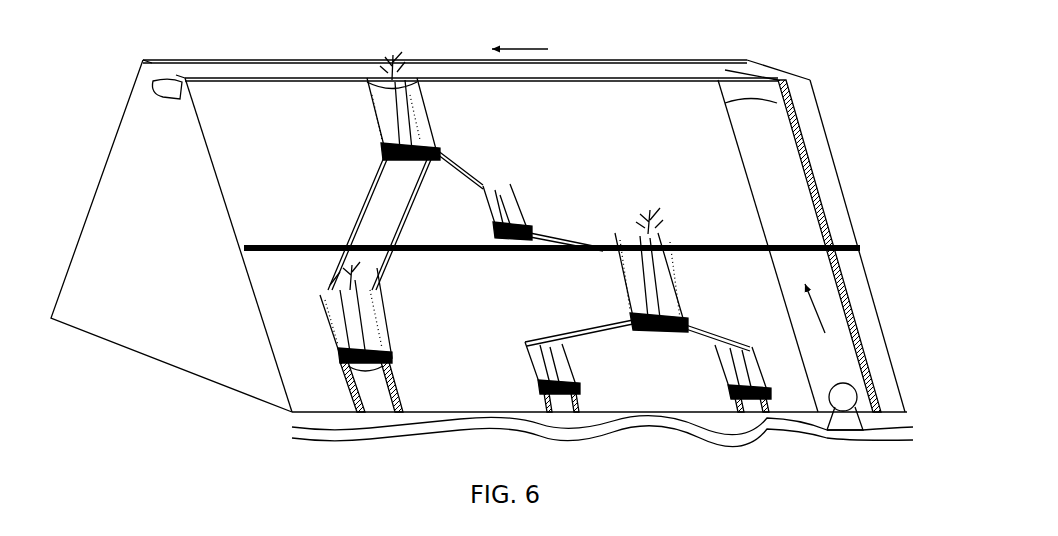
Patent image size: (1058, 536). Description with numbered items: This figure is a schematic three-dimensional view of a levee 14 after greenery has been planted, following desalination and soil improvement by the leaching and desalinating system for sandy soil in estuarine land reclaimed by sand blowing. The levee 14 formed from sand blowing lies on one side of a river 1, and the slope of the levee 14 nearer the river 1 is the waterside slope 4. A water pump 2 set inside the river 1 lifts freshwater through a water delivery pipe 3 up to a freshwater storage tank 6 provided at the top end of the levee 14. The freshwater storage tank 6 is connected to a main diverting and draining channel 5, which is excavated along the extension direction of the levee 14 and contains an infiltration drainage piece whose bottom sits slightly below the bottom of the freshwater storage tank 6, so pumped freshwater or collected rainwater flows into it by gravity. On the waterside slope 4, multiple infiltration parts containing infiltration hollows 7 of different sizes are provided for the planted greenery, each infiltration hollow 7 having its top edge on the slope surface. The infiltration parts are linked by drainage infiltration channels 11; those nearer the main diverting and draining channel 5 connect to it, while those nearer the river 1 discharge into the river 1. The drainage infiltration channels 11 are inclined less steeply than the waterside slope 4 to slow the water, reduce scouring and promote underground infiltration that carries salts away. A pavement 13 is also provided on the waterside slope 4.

The river 1 is at (911, 436).
The water pump 2 is at (846, 396).
The water delivery pipe 3 is at (836, 344).
The waterside slope 4 is at (734, 209).
The main diverting and draining channel 5 is at (180, 70).
The freshwater storage tank 6 is at (731, 73).
The infiltration hollow 7 is at (411, 123).
The drainage infiltration channel 11 is at (465, 167).
The pavement 13 is at (306, 245).
The levee 14 is at (145, 187).